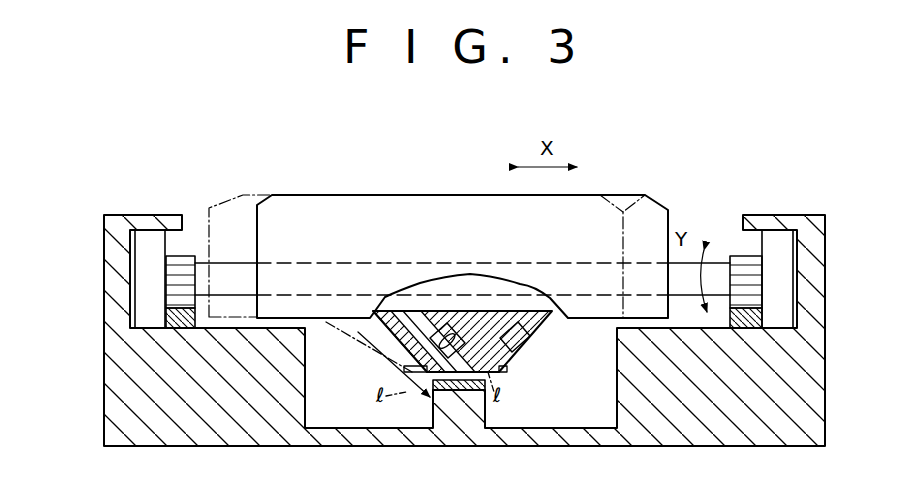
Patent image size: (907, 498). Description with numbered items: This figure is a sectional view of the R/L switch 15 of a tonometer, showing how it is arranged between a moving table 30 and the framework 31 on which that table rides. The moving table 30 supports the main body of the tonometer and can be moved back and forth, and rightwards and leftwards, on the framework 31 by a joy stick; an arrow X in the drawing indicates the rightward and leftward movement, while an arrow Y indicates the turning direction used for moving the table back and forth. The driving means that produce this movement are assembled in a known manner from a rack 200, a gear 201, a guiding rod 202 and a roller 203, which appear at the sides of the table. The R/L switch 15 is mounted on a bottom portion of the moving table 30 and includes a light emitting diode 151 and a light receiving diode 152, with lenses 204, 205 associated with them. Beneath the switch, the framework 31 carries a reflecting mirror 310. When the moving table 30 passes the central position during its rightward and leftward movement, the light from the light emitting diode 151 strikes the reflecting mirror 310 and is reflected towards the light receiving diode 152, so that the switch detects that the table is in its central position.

The R/L switch 15 is at (528, 352).
The moving table 30 is at (467, 196).
The framework 31 is at (797, 410).
The light emitting diode 151 is at (388, 346).
The light receiving diode 152 is at (520, 329).
The rack 200 is at (135, 328).
The gear 201 is at (188, 256).
The guiding rod 202 is at (339, 262).
The roller 203 is at (145, 278).
The lens 204 is at (402, 370).
The lens 205 is at (499, 372).
The reflecting mirror 310 is at (442, 390).